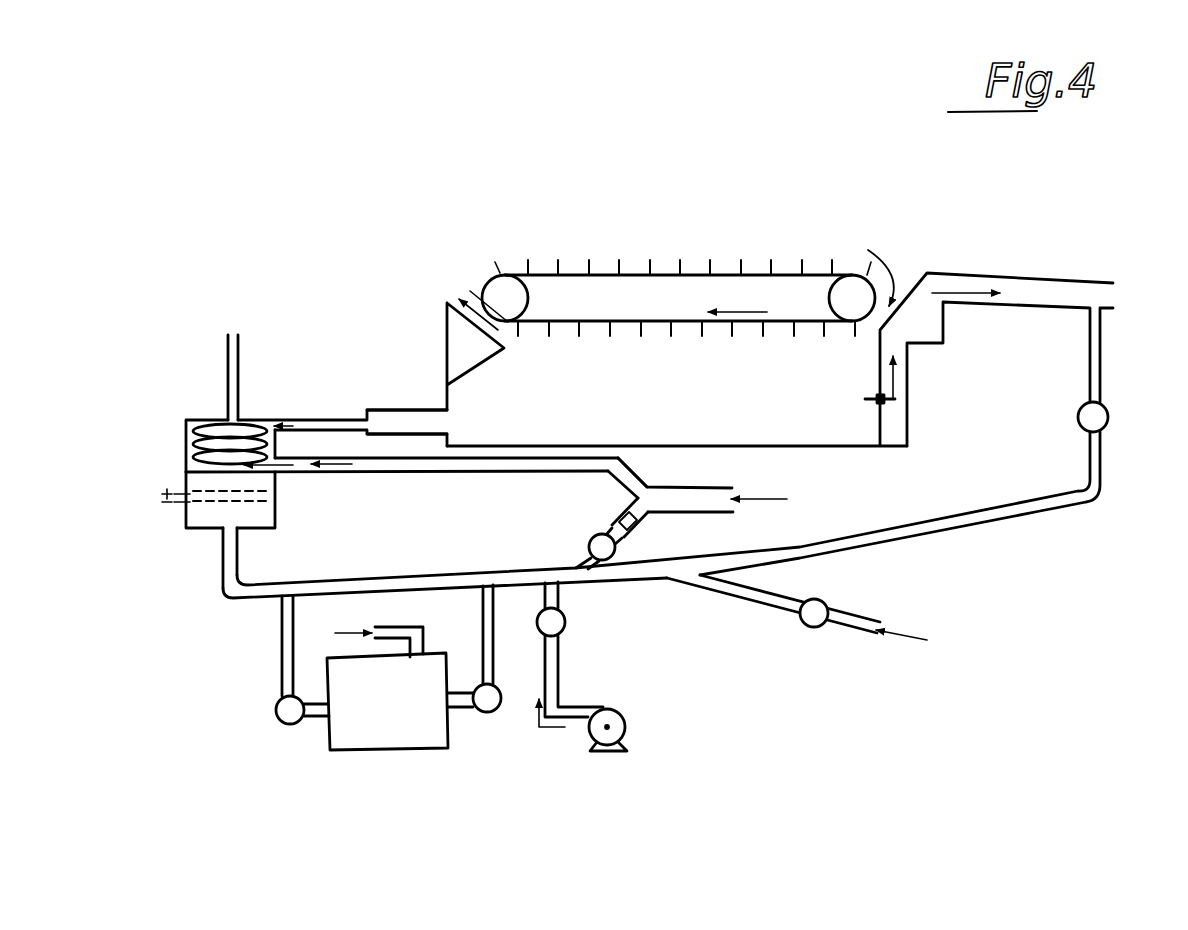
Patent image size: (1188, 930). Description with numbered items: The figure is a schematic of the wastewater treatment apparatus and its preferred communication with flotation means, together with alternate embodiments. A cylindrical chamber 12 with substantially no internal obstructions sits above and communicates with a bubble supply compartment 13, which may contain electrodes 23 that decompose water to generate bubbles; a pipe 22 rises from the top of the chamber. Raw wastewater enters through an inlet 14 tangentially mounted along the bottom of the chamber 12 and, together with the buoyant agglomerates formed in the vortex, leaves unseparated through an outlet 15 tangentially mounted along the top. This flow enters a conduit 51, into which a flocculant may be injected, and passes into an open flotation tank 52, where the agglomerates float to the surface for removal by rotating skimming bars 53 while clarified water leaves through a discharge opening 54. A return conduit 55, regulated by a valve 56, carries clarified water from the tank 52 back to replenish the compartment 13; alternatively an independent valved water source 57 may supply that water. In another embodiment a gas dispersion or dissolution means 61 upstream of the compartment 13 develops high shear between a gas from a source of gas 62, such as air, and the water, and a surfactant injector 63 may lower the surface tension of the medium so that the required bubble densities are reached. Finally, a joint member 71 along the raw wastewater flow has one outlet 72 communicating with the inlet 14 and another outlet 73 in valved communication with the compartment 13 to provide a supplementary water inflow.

The cylindrical chamber 12 is at (186, 448).
The bubble supply compartment 13 is at (186, 517).
The inlet 14 is at (287, 470).
The outlet 15 is at (300, 425).
The supply pipe 22 is at (228, 362).
The electrodes 23 is at (218, 488).
The conduit 51 is at (398, 418).
The open flotation tank 52 is at (840, 447).
The rotating skimming bars 53 is at (680, 327).
The discharge opening 54 is at (888, 401).
The return conduit 55 is at (1096, 475).
The valve 56 is at (1108, 420).
The independent valved water source 57 is at (790, 606).
The gas dispersion or dissolution means 61 is at (455, 728).
The source of gas 62 is at (424, 634).
The surfactant injector 63 is at (620, 723).
The joint member 71 is at (643, 487).
The outlet 72 is at (607, 468).
The outlet 73 is at (633, 530).